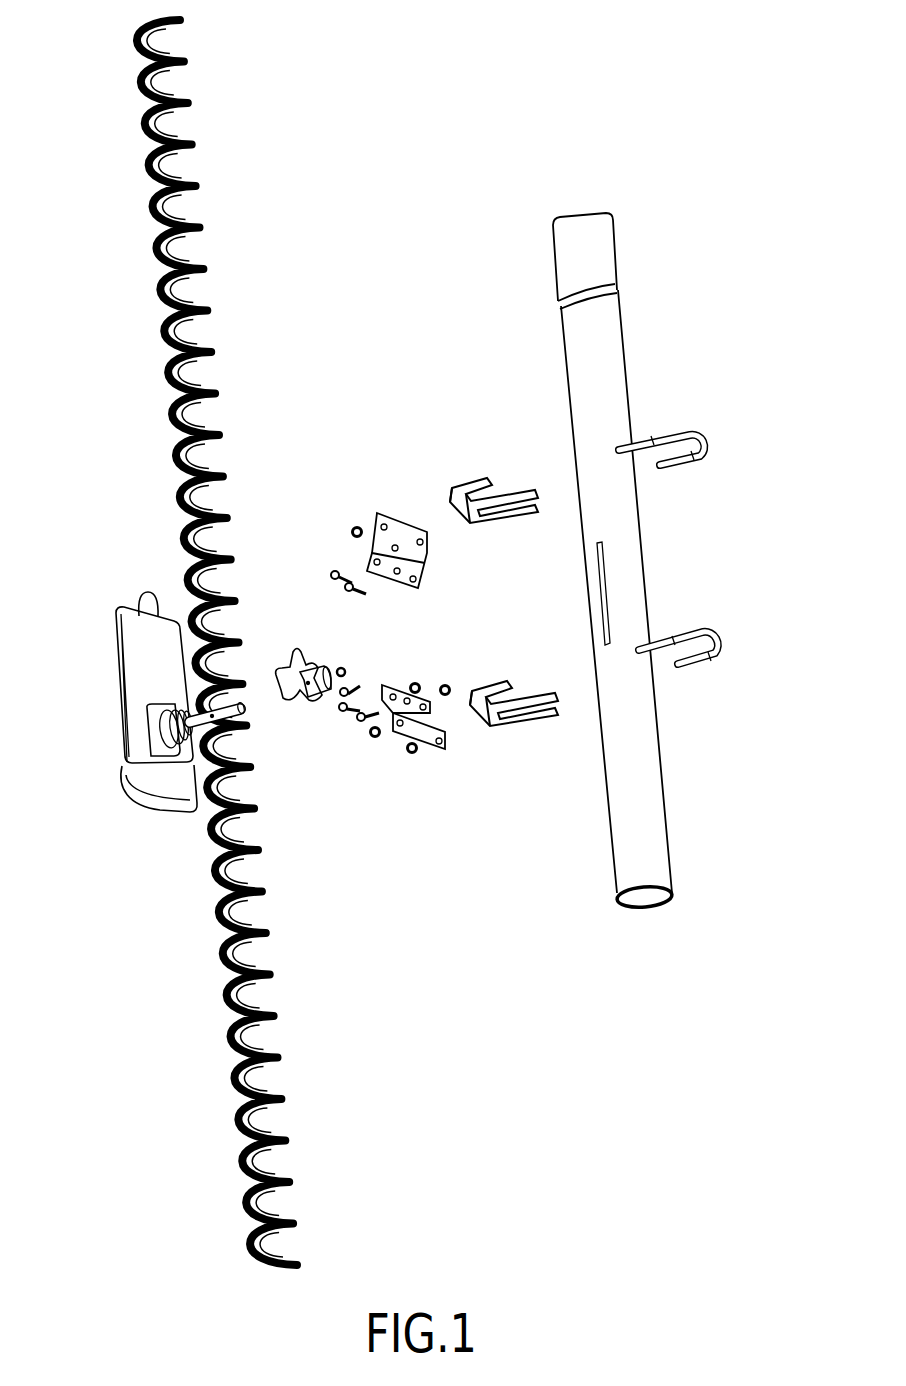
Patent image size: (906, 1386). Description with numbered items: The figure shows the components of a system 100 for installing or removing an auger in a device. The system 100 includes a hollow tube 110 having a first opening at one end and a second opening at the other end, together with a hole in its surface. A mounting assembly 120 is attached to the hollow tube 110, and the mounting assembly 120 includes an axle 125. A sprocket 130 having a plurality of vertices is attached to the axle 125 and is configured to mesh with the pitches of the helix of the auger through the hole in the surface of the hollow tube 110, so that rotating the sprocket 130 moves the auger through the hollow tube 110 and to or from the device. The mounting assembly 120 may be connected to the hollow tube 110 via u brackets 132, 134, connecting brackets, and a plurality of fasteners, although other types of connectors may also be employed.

The system 100 is at (671, 163).
The hollow tube 110 is at (653, 786).
The mounting assembly 120 is at (118, 685).
The axle 125 is at (245, 705).
The sprocket 130 is at (301, 655).
The u bracket 132 is at (705, 625).
The u bracket 134 is at (690, 428).